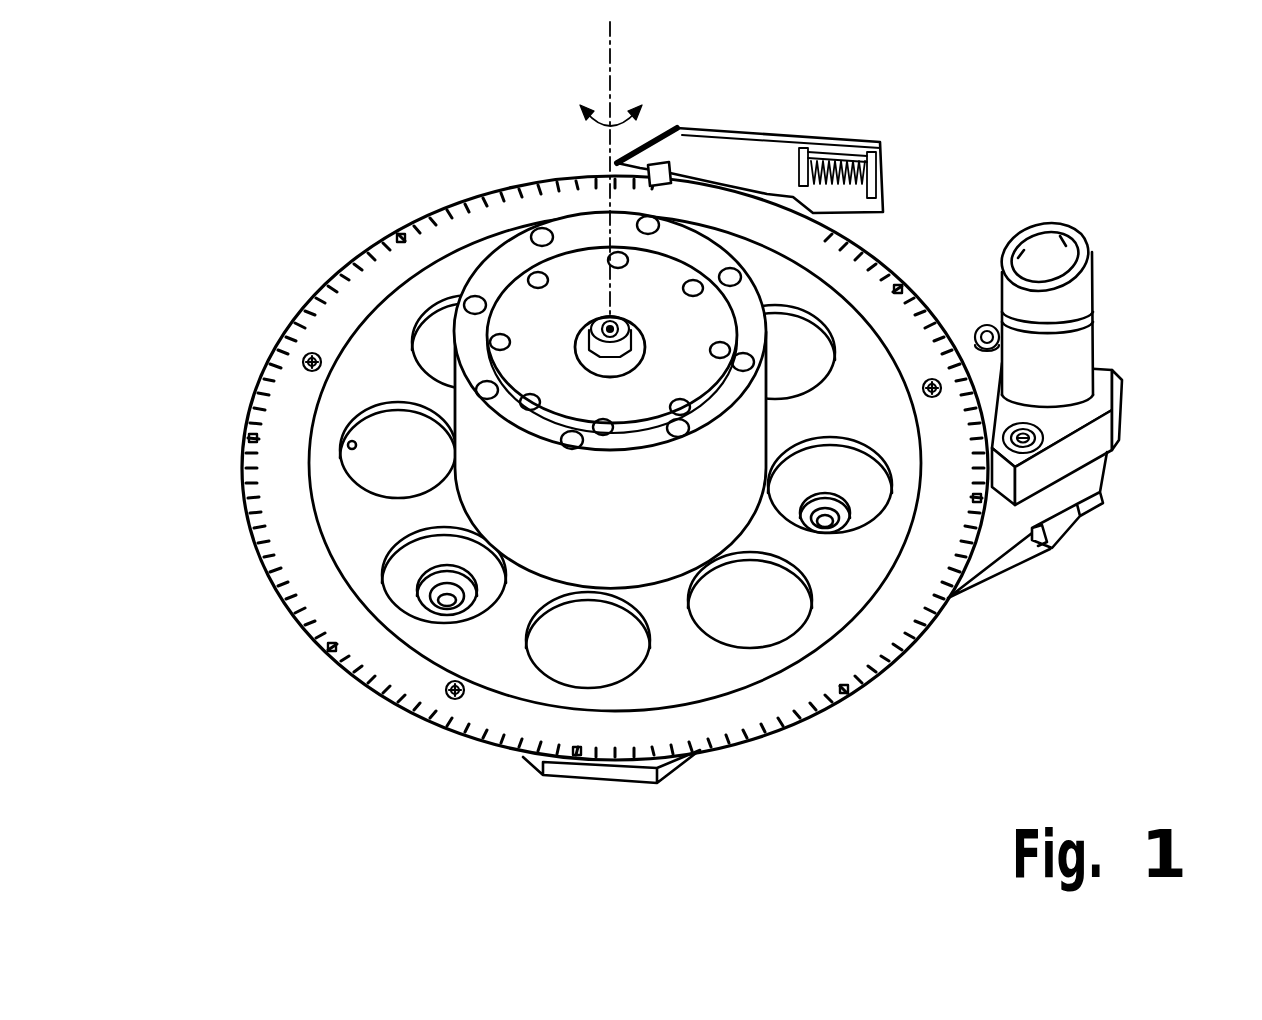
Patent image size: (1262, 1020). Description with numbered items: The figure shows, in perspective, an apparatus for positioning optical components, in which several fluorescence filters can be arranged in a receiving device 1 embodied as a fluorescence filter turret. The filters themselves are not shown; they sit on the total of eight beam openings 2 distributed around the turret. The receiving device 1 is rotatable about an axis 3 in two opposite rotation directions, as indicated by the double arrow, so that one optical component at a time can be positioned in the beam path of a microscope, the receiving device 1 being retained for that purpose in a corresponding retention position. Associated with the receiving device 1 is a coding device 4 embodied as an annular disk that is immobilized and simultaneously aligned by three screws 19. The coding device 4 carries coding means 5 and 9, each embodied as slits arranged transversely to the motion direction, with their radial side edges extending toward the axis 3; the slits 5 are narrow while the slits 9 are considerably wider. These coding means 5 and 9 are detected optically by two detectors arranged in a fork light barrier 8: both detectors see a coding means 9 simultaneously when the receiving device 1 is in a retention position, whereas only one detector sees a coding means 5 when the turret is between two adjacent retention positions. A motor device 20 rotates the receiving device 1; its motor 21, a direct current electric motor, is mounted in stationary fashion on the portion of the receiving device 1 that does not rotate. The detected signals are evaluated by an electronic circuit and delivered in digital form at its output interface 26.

The receiving device 1 is at (270, 266).
The beam openings 2 is at (567, 657).
The axis 3 is at (612, 88).
The coding device 4 is at (702, 735).
The coding means 5 is at (280, 590).
The fork light barrier 8 is at (662, 162).
The coding means 9 is at (898, 290).
The screws 19 is at (933, 383).
The motor device 20 is at (1128, 304).
The motor 21 is at (1047, 247).
The 8-pin output interface 26 is at (853, 147).